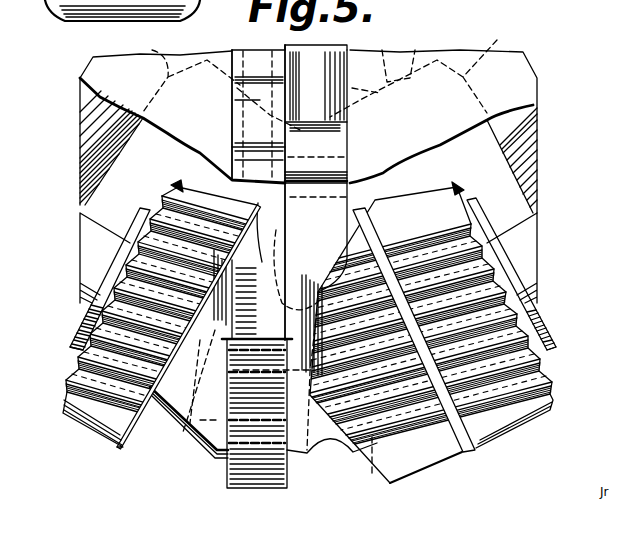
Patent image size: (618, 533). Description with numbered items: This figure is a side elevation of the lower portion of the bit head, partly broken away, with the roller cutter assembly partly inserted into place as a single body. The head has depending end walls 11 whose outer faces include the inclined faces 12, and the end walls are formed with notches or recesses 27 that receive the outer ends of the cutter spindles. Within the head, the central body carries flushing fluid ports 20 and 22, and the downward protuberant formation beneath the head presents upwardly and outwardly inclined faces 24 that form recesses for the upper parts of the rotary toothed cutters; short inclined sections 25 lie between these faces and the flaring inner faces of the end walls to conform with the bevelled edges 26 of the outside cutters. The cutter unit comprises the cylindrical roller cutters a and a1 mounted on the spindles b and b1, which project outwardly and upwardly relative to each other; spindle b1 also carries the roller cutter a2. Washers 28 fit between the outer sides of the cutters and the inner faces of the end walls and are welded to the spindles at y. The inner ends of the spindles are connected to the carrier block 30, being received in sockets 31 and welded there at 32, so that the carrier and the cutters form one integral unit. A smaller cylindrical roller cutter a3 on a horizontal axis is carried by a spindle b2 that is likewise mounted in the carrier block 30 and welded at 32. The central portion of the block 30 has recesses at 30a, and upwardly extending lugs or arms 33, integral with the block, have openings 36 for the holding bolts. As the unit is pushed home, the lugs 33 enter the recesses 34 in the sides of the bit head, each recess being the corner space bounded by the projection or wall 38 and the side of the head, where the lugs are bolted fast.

The inclined faces 12 is at (86, 72).
The end walls 11 is at (100, 96).
The notches or recesses 27 is at (100, 133).
The wall or lug 38 is at (234, 157).
The openings 36 is at (425, 171).
The short inclined sections 25 is at (325, 67).
The port 22 is at (393, 62).
The inclined faces 24 is at (237, 88).
The port 20 is at (236, 125).
The recesses 34 is at (327, 93).
The lugs or arms 33 is at (335, 150).
The recesses 30a is at (285, 247).
The carrier block 30 is at (215, 455).
The sockets 31 is at (195, 435).
The welds 32 is at (185, 405).
The smaller cylindrical roller cutter a3 is at (266, 470).
The spindle b2 is at (312, 458).
The roller cutter a is at (112, 412).
The roller cutter a2 is at (425, 455).
The roller cutter a1 is at (515, 420).
The weld y is at (134, 242).
The washers 28 is at (70, 324).
The bevelled edges 26 is at (63, 394).
The spindle b is at (92, 255).
The spindle b1 is at (520, 266).